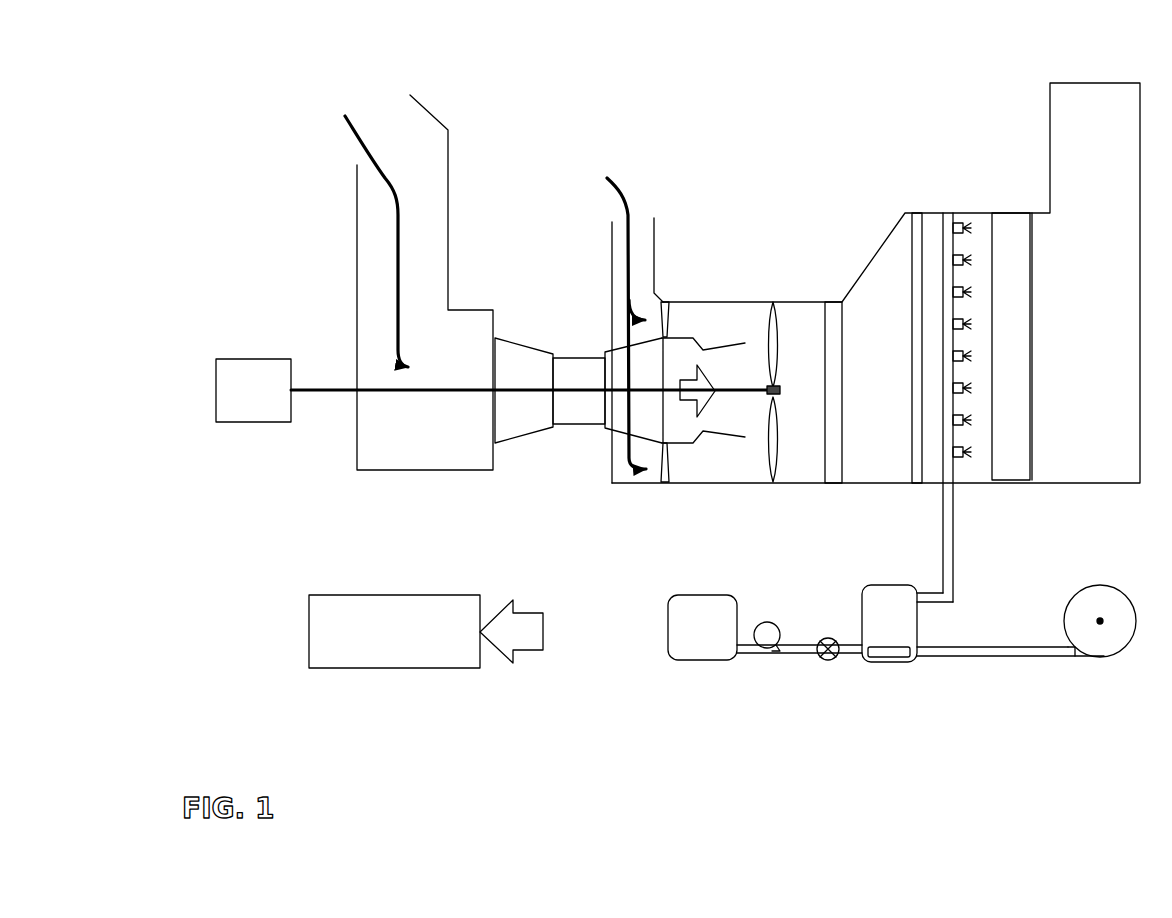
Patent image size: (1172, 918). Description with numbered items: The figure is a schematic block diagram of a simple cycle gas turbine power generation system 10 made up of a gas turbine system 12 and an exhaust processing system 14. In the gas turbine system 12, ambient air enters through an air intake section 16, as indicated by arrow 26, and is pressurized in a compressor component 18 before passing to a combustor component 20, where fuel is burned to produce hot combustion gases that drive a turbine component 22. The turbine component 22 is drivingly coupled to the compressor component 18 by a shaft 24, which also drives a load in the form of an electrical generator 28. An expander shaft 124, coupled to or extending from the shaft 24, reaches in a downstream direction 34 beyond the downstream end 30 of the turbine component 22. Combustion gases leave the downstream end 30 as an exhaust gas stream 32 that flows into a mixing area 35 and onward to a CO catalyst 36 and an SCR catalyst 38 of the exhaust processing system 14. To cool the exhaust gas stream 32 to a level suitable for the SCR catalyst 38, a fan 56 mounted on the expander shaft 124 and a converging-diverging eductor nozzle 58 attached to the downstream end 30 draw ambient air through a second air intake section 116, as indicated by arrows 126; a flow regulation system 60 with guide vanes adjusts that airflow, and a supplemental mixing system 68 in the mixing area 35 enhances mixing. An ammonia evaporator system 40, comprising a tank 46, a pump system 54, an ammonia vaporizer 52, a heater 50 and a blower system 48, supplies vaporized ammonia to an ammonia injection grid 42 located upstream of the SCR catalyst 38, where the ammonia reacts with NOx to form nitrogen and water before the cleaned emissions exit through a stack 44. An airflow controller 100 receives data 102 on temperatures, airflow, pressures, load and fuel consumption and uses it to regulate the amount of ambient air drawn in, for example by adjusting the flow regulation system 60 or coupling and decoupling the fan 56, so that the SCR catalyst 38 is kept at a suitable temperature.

The gas turbine power generation system 10 is at (514, 115).
The gas turbine system 12 is at (578, 408).
The exhaust processing system 14 is at (876, 280).
The air intake section 16 is at (345, 217).
The compressor component 18 is at (524, 390).
The combustor component 20 is at (579, 391).
The turbine component 22 is at (621, 431).
The shaft 24 is at (330, 398).
The arrow 26 is at (346, 129).
The electrical generator 28 is at (248, 425).
The downstream end 30 is at (662, 381).
The exhaust gas stream 32 is at (697, 391).
The downstream direction 34 is at (804, 497).
The mixing area 35 is at (787, 376).
The CO catalyst 36 is at (903, 458).
The SCR catalyst 38 is at (1032, 410).
The ammonia evaporator system 40 is at (877, 443).
The ammonia injection grid 42 is at (945, 238).
The stack 44 is at (1093, 65).
The tank 46 is at (668, 639).
The blower system 48 is at (1112, 657).
The heater 50 is at (895, 660).
The ammonia vaporizer 52 is at (861, 619).
The pump system 54 is at (759, 623).
The fan 56 is at (778, 325).
The eductor nozzle 58 is at (725, 336).
The flow regulation system 60 is at (668, 301).
The supplemental mixing system 68 is at (833, 300).
The airflow controller 100 is at (394, 631).
The data 102 is at (525, 613).
The air intake section 116 is at (604, 246).
The expander shaft 124 is at (769, 371).
The arrows 126 is at (613, 190).